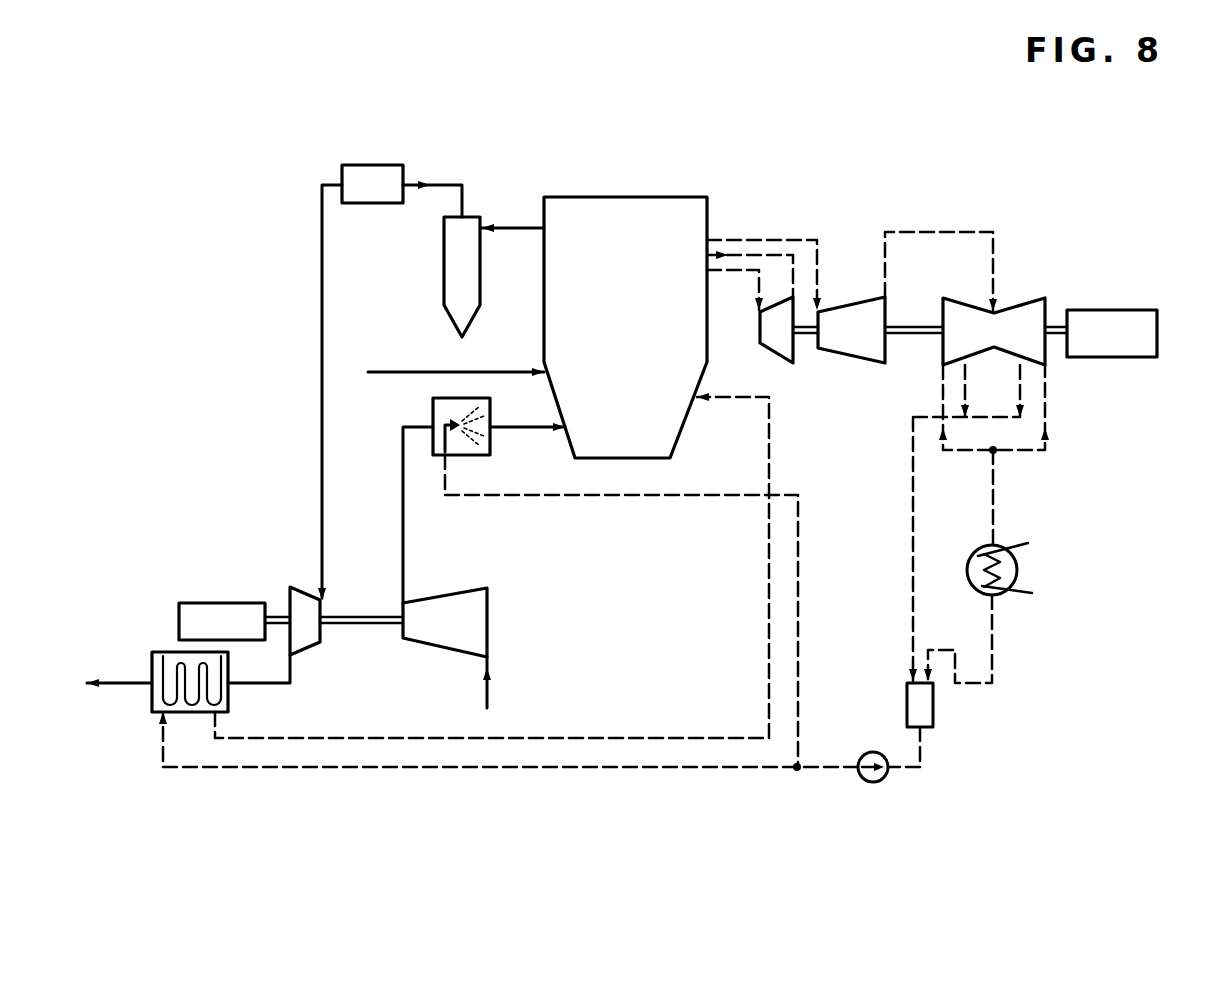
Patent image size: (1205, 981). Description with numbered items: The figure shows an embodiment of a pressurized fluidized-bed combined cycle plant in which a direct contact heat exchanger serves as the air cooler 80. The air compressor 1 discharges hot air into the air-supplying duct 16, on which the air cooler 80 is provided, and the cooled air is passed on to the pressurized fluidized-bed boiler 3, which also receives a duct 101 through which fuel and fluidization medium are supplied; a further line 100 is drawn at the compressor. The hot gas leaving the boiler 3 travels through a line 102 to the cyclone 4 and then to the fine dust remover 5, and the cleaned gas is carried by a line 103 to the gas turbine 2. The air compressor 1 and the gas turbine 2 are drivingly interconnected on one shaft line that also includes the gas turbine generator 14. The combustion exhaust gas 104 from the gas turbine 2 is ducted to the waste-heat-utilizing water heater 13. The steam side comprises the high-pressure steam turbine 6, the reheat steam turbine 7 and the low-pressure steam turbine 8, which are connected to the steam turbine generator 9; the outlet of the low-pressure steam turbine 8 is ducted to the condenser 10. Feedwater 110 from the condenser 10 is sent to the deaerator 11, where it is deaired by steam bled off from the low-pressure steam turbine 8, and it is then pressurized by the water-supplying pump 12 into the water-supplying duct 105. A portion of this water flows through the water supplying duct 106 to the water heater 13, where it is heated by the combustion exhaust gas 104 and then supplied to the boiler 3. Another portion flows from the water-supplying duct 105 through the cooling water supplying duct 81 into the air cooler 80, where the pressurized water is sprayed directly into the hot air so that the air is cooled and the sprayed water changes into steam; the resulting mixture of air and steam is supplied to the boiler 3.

The air compressor 1 is at (445, 648).
The gas turbine 2 is at (293, 587).
The pressurized fluidized-bed boiler 3 is at (683, 218).
The cyclone 4 is at (444, 264).
The fine dust remover 5 is at (372, 165).
The high-pressure steam turbine 6 is at (778, 355).
The reheat steam turbine 7 is at (846, 298).
The low-pressure steam turbine 8 is at (1030, 298).
The steam turbine generator 9 is at (1112, 310).
The condenser 10 is at (1017, 571).
The deaerator 11 is at (933, 715).
The water-supplying pump 12 is at (873, 782).
The waste-heat-utilizing water heater 13 is at (152, 655).
The gas turbine generator 14 is at (223, 603).
The air-supplying duct 16 is at (403, 543).
The air cooler 80 is at (433, 400).
The cooling water supplying duct 81 is at (798, 582).
The combustion gas inlet line 100 is at (487, 700).
The duct 101 is at (392, 372).
The flue gas line 102 is at (516, 228).
The cleaned gas line 103 is at (322, 362).
The combustion exhaust gas 104 is at (290, 683).
The water-supplying duct 105 is at (826, 767).
The water supplying duct 106 is at (465, 767).
The feedwater 110 is at (993, 635).